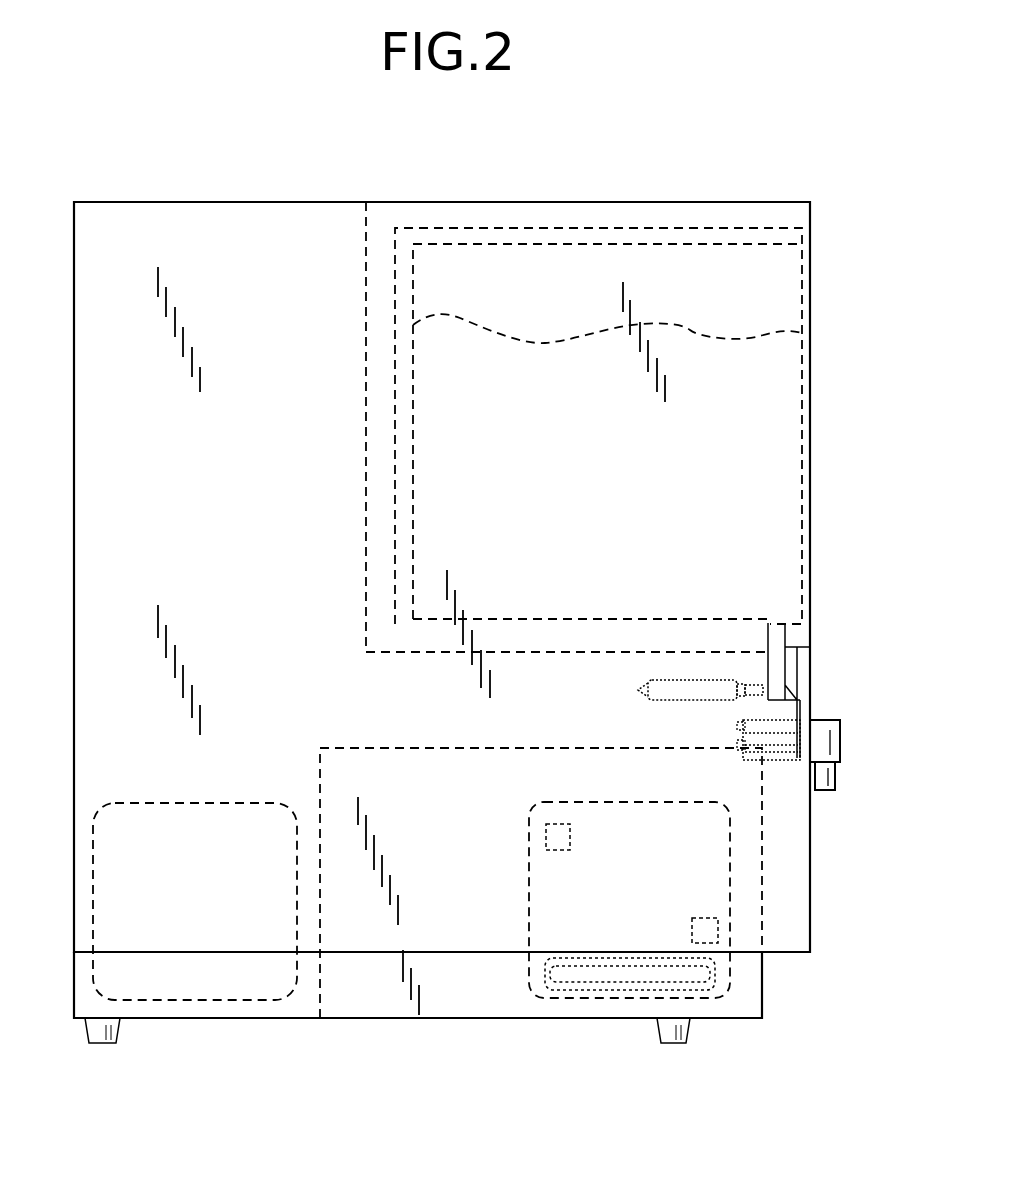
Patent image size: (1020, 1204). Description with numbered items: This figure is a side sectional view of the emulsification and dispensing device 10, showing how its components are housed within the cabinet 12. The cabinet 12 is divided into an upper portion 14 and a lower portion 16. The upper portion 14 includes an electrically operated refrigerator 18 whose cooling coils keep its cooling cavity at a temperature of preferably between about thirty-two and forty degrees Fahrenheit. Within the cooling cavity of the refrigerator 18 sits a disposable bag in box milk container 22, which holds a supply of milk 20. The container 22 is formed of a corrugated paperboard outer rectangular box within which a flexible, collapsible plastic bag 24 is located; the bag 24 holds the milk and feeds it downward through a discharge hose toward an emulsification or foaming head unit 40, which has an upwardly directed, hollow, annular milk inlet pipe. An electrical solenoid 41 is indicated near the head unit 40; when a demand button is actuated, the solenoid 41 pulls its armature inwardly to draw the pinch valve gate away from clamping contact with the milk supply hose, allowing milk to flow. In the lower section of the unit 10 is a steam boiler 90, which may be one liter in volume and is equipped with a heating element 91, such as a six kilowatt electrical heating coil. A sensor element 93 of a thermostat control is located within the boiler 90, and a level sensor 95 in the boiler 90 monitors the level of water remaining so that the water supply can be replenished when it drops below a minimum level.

The emulsification and dispensing device 10 is at (641, 156).
The cabinet 12 is at (259, 200).
The upper portion 14 is at (261, 453).
The lower portion 16 is at (214, 791).
The refrigerator 18 is at (360, 521).
The milk 20 is at (601, 480).
The bag in box milk container 22 is at (812, 412).
The flexible, collapsible plastic bag 24 is at (674, 316).
The emulsification or foaming head unit 40 is at (833, 706).
The electrical solenoid 41 is at (675, 708).
The steam boiler 90 is at (643, 907).
The heating element 91 is at (565, 960).
The sensor element 93 is at (548, 824).
The level sensor 95 is at (705, 930).